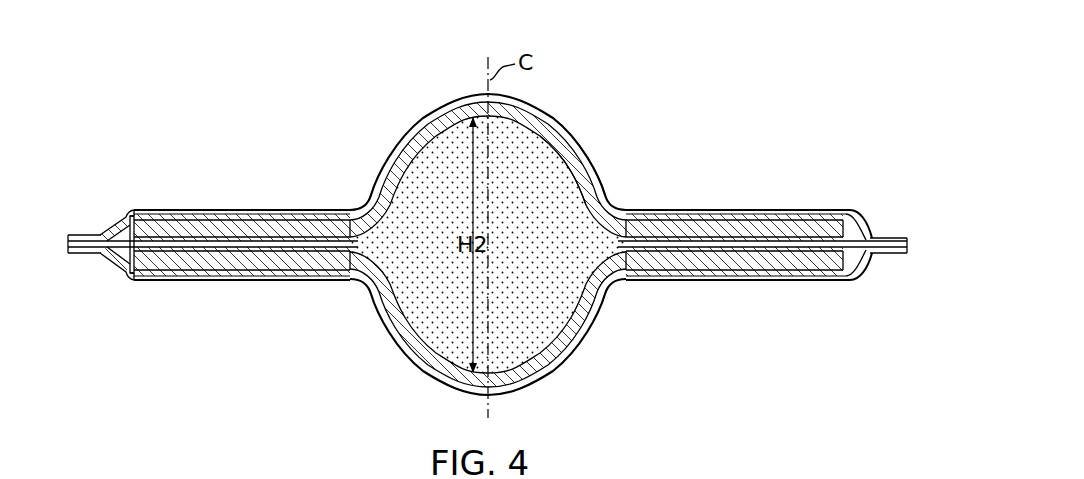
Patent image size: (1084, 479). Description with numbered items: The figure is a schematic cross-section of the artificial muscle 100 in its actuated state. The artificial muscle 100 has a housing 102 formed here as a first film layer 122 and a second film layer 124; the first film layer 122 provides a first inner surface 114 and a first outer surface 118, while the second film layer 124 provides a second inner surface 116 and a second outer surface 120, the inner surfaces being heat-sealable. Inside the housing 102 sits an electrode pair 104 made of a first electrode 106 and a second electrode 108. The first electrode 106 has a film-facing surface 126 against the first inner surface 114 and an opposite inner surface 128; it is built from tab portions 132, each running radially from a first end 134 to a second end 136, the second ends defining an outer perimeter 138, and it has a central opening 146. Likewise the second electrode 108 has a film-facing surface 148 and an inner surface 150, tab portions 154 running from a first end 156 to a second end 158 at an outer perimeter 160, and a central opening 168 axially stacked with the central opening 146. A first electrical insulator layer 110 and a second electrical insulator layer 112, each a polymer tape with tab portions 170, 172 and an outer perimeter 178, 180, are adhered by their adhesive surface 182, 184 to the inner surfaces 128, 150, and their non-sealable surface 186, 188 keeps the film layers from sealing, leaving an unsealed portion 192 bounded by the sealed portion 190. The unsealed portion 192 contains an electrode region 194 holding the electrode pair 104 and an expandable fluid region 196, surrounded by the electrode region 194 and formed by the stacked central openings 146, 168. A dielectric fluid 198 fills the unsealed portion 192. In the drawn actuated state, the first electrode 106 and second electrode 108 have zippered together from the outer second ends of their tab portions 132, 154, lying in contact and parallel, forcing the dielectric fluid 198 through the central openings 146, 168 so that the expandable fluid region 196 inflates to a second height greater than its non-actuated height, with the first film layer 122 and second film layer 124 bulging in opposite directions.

The artificial muscle 100 is at (531, 158).
The housing 102 is at (103, 181).
The electrode pair 104 is at (749, 334).
The first electrode 106 is at (736, 329).
The second electrode 108 is at (736, 159).
The first electrical insulator layer 110 is at (488, 244).
The second electrical insulator layer 112 is at (539, 185).
The first inner surface 114 is at (115, 258).
The second inner surface 116 is at (118, 232).
The first outer surface 118 is at (72, 258).
The second outer surface 120 is at (74, 235).
The first film layer 122 is at (469, 255).
The second film layer 124 is at (488, 210).
The film-facing surface 126 is at (216, 262).
The inner surface 128 is at (192, 258).
The tab portions 132 is at (242, 321).
The first end 134 is at (365, 276).
The second end 136 is at (143, 266).
The outer perimeter 138 is at (128, 267).
The central opening 146 is at (470, 244).
The film-facing surface 148 is at (222, 230).
The inner surface 150 is at (275, 225).
The tab portions 154 is at (312, 195).
The first end 156 is at (364, 216).
The second end 158 is at (158, 230).
The outer perimeter 160 is at (128, 215).
The central opening 168 is at (592, 152).
The tab portions 170 is at (783, 262).
The tab portions 172 is at (817, 233).
The outer perimeter 178 is at (860, 252).
The outer perimeter 180 is at (862, 228).
The adhesive surface 182 is at (694, 263).
The adhesive surface 184 is at (688, 237).
The non-sealable surface 186 is at (452, 358).
The non-sealable surface 188 is at (446, 135).
The sealed portion 190 is at (915, 245).
The unsealed portion 192 is at (782, 207).
The electrode region 194 is at (500, 328).
The expandable fluid region 196 is at (488, 137).
The dielectric fluid 198 is at (543, 350).